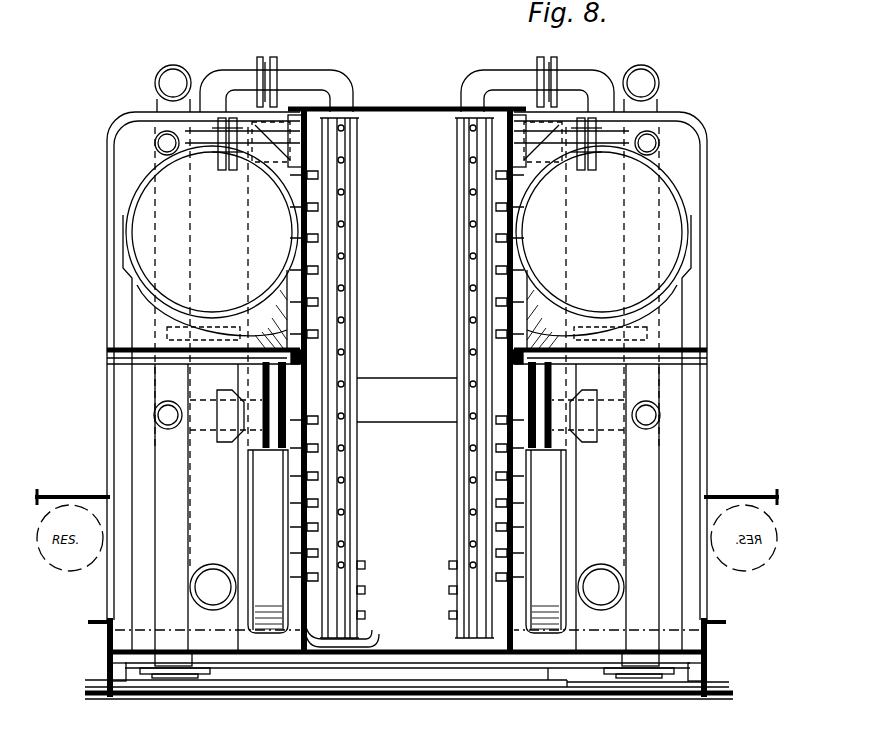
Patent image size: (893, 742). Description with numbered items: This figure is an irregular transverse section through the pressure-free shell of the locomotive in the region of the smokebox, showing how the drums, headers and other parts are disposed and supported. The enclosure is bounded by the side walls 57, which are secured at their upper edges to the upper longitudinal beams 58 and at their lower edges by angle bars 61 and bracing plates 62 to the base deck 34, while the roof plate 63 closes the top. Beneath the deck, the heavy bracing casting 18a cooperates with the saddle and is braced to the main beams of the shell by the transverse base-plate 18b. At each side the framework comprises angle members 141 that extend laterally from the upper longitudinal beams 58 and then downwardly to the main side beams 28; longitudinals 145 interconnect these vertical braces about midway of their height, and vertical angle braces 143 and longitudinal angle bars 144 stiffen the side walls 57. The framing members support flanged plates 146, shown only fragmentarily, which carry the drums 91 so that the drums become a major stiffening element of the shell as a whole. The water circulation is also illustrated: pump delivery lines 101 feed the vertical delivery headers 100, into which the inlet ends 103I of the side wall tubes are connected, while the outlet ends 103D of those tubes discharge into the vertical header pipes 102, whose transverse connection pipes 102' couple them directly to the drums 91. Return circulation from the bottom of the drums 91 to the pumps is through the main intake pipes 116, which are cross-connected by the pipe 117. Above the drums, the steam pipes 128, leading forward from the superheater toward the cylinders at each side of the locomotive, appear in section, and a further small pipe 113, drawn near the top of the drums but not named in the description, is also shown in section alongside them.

The steam pipes 128 is at (186, 64).
The transverse connection pipes 102' is at (407, 79).
The roof plate 63 is at (412, 108).
The tube 113 is at (160, 138).
The angle members 141 is at (107, 193).
The vertical header pipes 102 is at (407, 378).
The upper longitudinal beams 58 is at (300, 150).
The inlet ends 103I is at (496, 222).
The outlet ends 103D is at (470, 290).
The drums 91 is at (238, 312).
The flanged plates 146 is at (130, 330).
The longitudinals 145 is at (107, 350).
The vertical angle braces 143 is at (310, 350).
The longitudinally extending angle bars 144 is at (514, 358).
The pump delivery lines 101 is at (154, 415).
The cross-connection pipe 117 is at (407, 400).
The vertical delivery headers 100 is at (407, 541).
The main intake pipe 116 is at (407, 507).
The side walls 57 is at (310, 515).
The bracing plates 62 is at (350, 640).
The angle bars 61 is at (380, 640).
The main side beams 28 is at (110, 668).
The base deck 34 is at (406, 663).
The bracing casting 18a is at (468, 686).
The transverse base-plate 18b is at (546, 698).